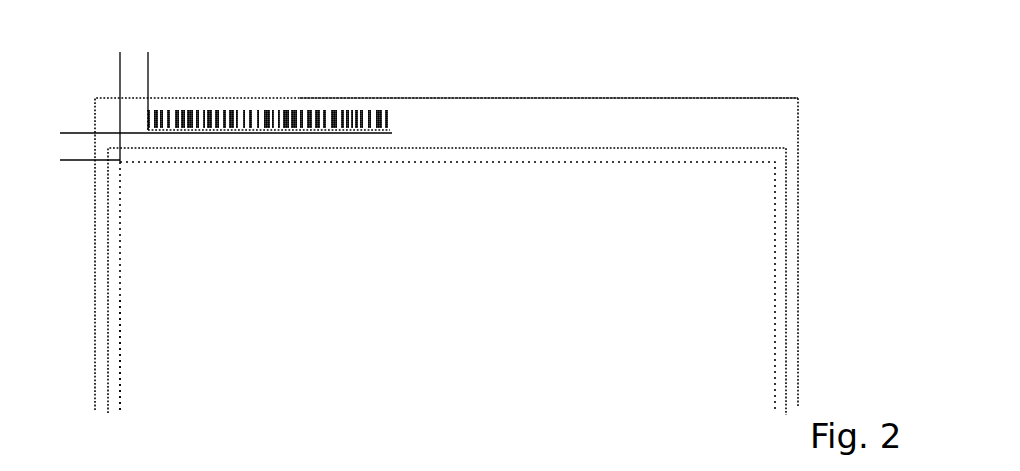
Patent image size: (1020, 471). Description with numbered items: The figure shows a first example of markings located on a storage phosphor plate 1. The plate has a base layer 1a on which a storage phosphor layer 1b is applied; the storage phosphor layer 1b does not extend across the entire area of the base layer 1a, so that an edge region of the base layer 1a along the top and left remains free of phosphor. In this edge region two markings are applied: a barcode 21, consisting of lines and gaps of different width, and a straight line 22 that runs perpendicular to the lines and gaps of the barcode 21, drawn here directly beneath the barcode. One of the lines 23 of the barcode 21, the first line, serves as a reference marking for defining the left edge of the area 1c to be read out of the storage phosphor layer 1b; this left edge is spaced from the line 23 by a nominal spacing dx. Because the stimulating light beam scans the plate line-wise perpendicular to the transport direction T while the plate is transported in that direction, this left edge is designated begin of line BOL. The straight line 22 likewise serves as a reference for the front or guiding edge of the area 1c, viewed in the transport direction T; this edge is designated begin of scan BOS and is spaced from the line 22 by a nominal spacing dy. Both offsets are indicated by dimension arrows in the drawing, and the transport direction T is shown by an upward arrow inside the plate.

The storage phosphor plate 1 is at (798, 117).
The base layer 1a is at (640, 110).
The storage phosphor layer 1b is at (786, 212).
The area to be read out 1c is at (120, 297).
The barcode 21 is at (253, 112).
The straight line 22 is at (390, 131).
The line of the barcode 23 is at (140, 112).
The begin of scan BOS is at (430, 162).
The begin of line BOL is at (120, 360).
The transport direction T is at (452, 245).
The nominal spacing dx is at (198, 67).
The nominal spacing dy is at (74, 83).